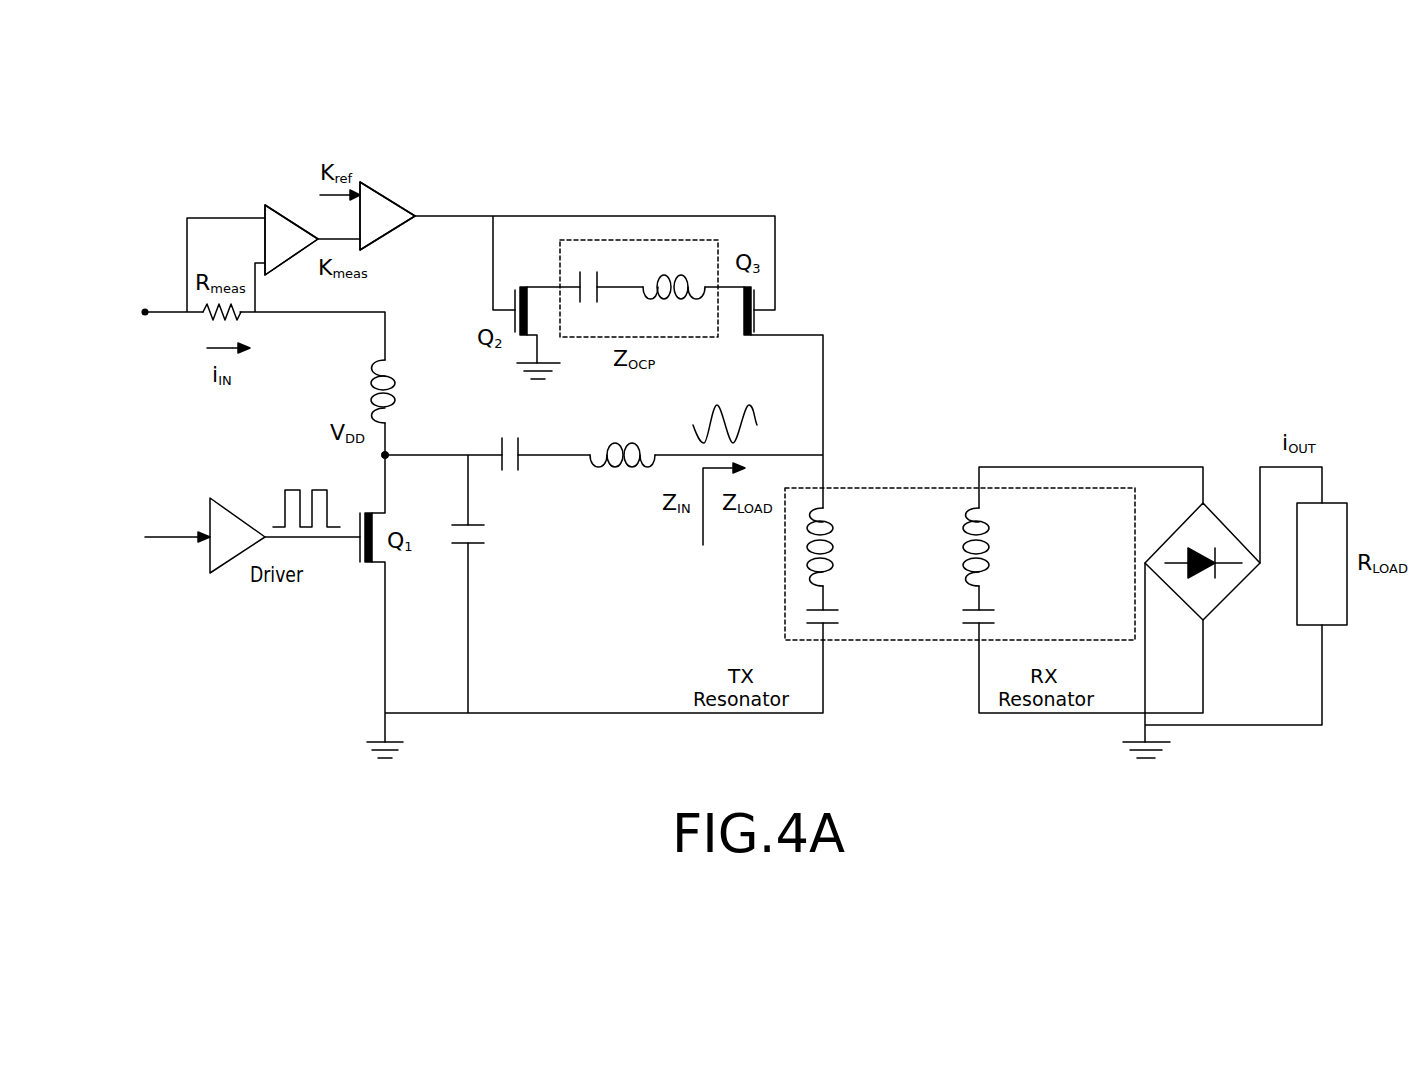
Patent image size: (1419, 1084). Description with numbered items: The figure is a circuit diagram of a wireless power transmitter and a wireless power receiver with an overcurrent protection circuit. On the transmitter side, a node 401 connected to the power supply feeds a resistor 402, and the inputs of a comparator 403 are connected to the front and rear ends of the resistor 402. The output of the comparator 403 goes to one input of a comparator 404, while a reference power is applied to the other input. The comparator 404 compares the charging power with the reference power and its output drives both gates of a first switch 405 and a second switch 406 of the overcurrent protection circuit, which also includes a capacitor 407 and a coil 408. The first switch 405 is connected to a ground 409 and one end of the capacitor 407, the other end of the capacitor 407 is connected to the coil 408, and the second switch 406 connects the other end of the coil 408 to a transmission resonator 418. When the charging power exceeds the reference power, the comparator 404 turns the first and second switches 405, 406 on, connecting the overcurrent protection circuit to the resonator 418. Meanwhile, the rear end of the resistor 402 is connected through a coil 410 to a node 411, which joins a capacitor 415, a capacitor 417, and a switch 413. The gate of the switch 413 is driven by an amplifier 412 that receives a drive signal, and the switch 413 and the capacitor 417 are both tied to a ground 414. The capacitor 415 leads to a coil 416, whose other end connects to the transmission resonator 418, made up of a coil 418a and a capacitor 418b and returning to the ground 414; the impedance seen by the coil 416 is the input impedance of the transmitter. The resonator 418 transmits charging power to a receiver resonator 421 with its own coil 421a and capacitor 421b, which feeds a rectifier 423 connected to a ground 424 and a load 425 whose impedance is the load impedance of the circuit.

The node 401 is at (142, 312).
The resistor 402 is at (207, 306).
The comparator 403 is at (265, 204).
The comparator 404 is at (391, 193).
The first switch 405 is at (520, 287).
The second switch 406 is at (756, 322).
The capacitor 407 is at (590, 272).
The coil 408 is at (665, 276).
The ground 409 is at (521, 375).
The coil 410 is at (371, 395).
The node 411 is at (387, 453).
The amplifier 412 is at (211, 498).
The switch 413 is at (365, 573).
The ground 414 is at (366, 746).
The capacitor 415 is at (522, 440).
The coil 416 is at (628, 445).
The capacitor 417 is at (486, 535).
The transmission resonator 418 is at (960, 564).
The coil 418a is at (835, 548).
The capacitor 418b is at (840, 615).
The resonator 421 is at (1047, 566).
The coil 421a is at (1000, 548).
The capacitor 421b is at (1003, 611).
The rectifier 423 is at (1237, 588).
The ground 424 is at (1124, 745).
The load 425 is at (1348, 608).